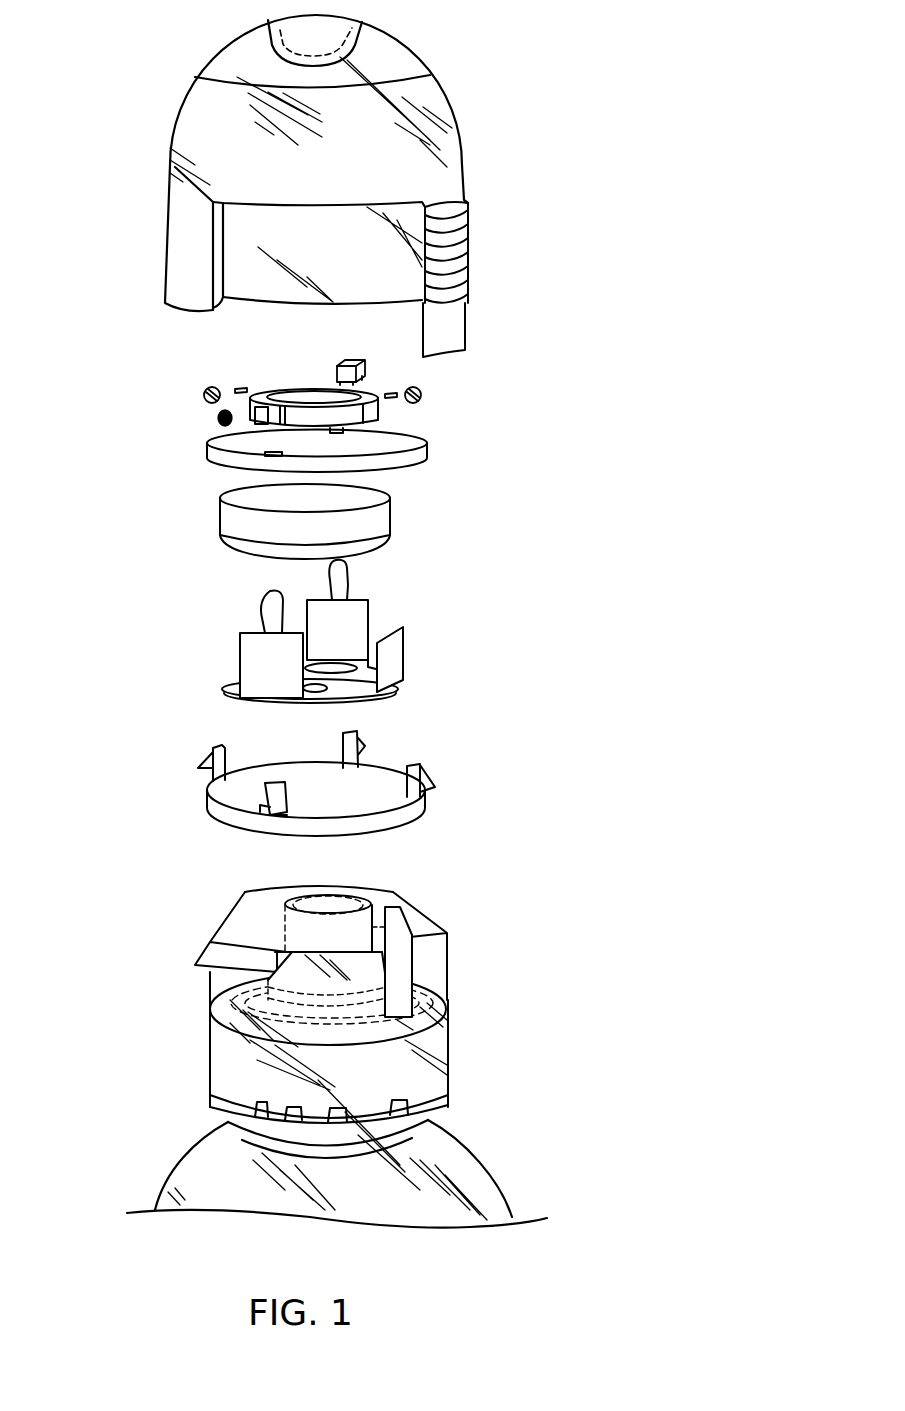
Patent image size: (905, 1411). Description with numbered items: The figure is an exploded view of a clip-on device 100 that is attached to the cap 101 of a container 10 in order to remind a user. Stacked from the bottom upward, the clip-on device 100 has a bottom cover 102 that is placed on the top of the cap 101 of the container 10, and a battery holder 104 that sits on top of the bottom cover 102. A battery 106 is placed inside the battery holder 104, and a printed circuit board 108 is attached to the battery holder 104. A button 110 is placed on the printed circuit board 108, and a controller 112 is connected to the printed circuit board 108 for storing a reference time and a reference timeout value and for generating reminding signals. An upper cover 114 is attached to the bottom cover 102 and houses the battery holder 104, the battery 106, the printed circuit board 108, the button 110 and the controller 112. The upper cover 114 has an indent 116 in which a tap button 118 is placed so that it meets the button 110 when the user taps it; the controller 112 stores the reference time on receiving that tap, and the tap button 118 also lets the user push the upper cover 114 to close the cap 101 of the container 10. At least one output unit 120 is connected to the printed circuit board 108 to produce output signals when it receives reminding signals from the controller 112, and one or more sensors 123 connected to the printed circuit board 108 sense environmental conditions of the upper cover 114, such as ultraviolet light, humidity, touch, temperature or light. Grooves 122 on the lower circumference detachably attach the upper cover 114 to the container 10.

The container 10 is at (450, 1173).
The clip-on device 100 is at (100, 207).
The cap 101 is at (373, 927).
The bottom cover 102 is at (432, 777).
The battery holder 104 is at (393, 663).
The battery 106 is at (373, 525).
The printed circuit board 108 is at (413, 455).
The button 110 is at (378, 420).
The controller 112 is at (367, 372).
The upper cover 114 is at (410, 138).
The indent 116 is at (358, 45).
The tap button 118 is at (290, 36).
The output unit 120 is at (183, 397).
The grooves 122 is at (468, 258).
The sensors 123 is at (218, 418).